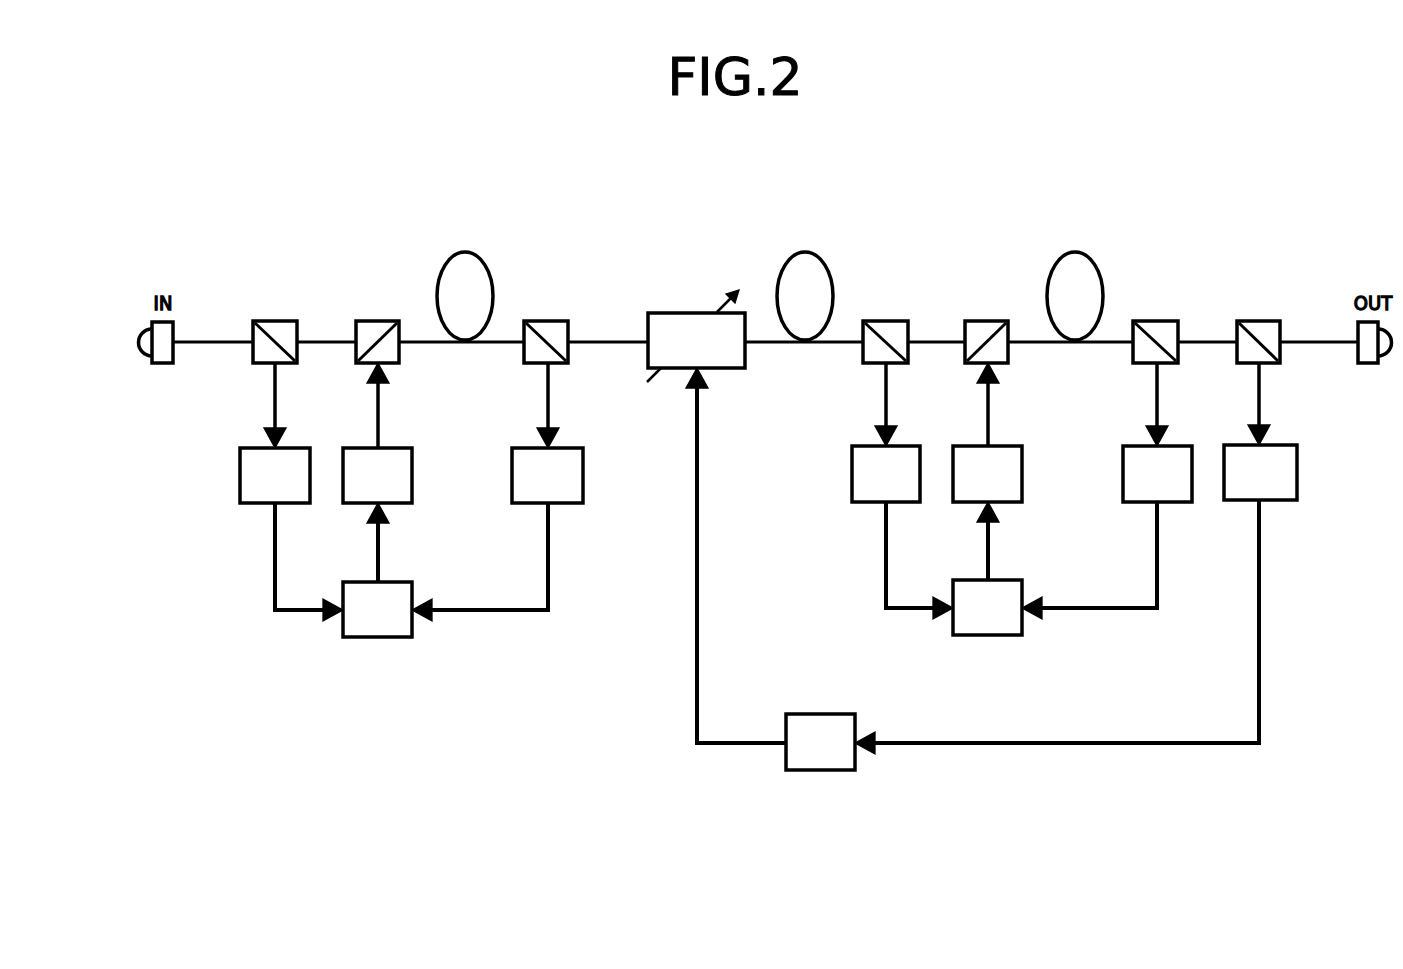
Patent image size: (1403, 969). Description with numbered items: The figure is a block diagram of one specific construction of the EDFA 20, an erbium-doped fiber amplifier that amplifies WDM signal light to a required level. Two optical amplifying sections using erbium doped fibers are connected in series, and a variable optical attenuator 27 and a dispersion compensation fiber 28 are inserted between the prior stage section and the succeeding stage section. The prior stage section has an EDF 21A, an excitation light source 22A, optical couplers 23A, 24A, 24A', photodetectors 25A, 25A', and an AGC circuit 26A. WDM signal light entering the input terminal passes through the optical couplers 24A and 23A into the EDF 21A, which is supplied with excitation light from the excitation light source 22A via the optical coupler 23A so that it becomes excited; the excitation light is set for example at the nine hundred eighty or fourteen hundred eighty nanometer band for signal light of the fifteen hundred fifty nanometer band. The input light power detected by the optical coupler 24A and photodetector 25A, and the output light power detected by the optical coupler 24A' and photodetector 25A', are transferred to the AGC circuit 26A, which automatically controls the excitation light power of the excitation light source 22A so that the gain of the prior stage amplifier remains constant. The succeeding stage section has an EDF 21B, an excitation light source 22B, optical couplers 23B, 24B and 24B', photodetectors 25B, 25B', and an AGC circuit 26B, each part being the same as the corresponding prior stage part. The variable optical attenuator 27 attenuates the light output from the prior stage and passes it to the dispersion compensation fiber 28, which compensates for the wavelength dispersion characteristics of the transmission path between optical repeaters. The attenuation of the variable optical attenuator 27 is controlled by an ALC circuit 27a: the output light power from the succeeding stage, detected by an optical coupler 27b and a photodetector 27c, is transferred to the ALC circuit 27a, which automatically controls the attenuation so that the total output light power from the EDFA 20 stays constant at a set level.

The EDFA 20 is at (1231, 192).
The EDF 21A is at (465, 252).
The EDF 21B is at (1075, 252).
The excitation light source 22A is at (395, 448).
The excitation light source 22B is at (1007, 446).
The optical coupler 23A is at (375, 320).
The optical coupler 23B is at (987, 320).
The optical coupler 24A is at (279, 309).
The optical coupler 24A' is at (555, 309).
The optical coupler 24B is at (889, 309).
The optical coupler 24B' is at (1165, 309).
The photodetector 25A is at (299, 492).
The photodetector 25A' is at (527, 492).
The photodetector 25B is at (911, 491).
The photodetector 25B' is at (1136, 491).
The AGC circuit 26A is at (380, 638).
The AGC circuit 26B is at (989, 636).
The variable optical attenuator 27 is at (676, 312).
The ALC circuit 27a is at (820, 771).
The optical coupler 27b is at (1260, 320).
The photodetector 27c is at (1277, 445).
The dispersion compensation fiber 28 is at (805, 252).